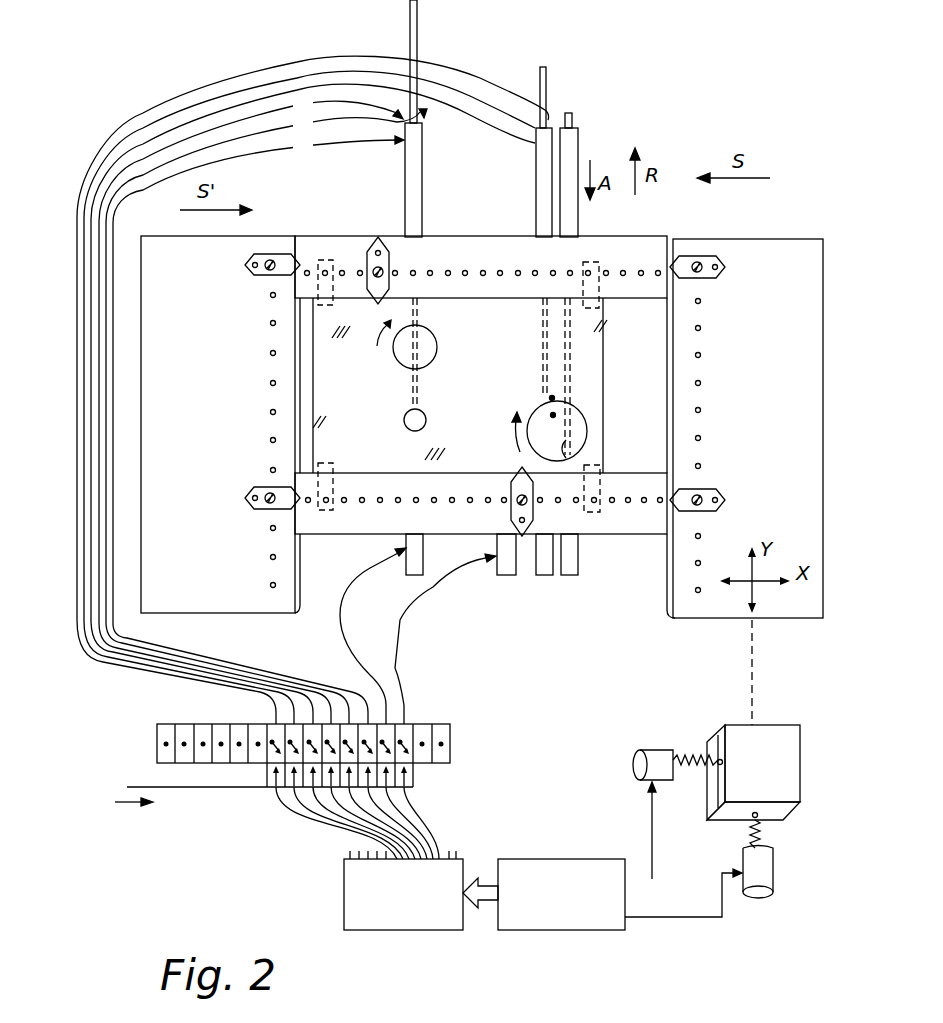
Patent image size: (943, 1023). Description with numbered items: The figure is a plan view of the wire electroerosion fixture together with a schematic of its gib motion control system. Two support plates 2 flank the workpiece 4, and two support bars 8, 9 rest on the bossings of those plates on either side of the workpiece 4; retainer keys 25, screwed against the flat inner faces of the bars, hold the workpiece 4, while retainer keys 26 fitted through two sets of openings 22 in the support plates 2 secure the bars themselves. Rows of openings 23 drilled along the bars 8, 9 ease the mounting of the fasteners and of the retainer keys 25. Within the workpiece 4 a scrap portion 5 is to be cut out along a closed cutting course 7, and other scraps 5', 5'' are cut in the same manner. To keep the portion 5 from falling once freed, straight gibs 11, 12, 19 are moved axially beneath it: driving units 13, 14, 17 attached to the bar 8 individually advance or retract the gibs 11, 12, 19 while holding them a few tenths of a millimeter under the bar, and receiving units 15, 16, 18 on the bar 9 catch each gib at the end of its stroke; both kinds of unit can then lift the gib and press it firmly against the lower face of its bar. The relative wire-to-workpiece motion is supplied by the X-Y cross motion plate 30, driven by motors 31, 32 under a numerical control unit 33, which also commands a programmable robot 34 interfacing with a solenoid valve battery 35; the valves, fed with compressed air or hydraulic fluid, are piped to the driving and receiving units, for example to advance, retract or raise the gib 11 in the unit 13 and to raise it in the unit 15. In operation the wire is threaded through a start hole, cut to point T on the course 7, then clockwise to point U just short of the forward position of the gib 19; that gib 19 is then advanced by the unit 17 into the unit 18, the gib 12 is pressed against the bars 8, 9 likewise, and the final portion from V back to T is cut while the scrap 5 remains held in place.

The support plate 2 is at (175, 281).
The workpiece 4 is at (344, 452).
The portion of the workpiece to be cut out 5 is at (536, 423).
The other scrap part 5' is at (431, 405).
The other scrap part 5'' is at (425, 340).
The cutting course 7 is at (585, 407).
The support bar 8 is at (337, 242).
The support bar 9 is at (348, 520).
The gib 11 is at (414, 28).
The gib 12 is at (540, 88).
The driving unit 13 is at (412, 188).
The driving unit 14 is at (547, 192).
The receiving unit 15 is at (450, 580).
The receiving unit 16 is at (547, 567).
The driving unit 17 is at (565, 167).
The receiving unit 18 is at (570, 573).
The gib 19 is at (570, 118).
The openings 22 is at (272, 323).
The openings 23 is at (433, 272).
The retainer keys 25 is at (322, 285).
The retainer keys 26 is at (263, 507).
The X-Y cross motion plate 30 is at (766, 779).
The motor 31 is at (655, 760).
The motor 32 is at (760, 875).
The numerical control unit 33 is at (558, 860).
The programmable robot 34 is at (345, 903).
The solenoid valve battery 35 is at (497, 739).
The point V is at (552, 398).
The point T is at (553, 415).
The point U is at (570, 440).